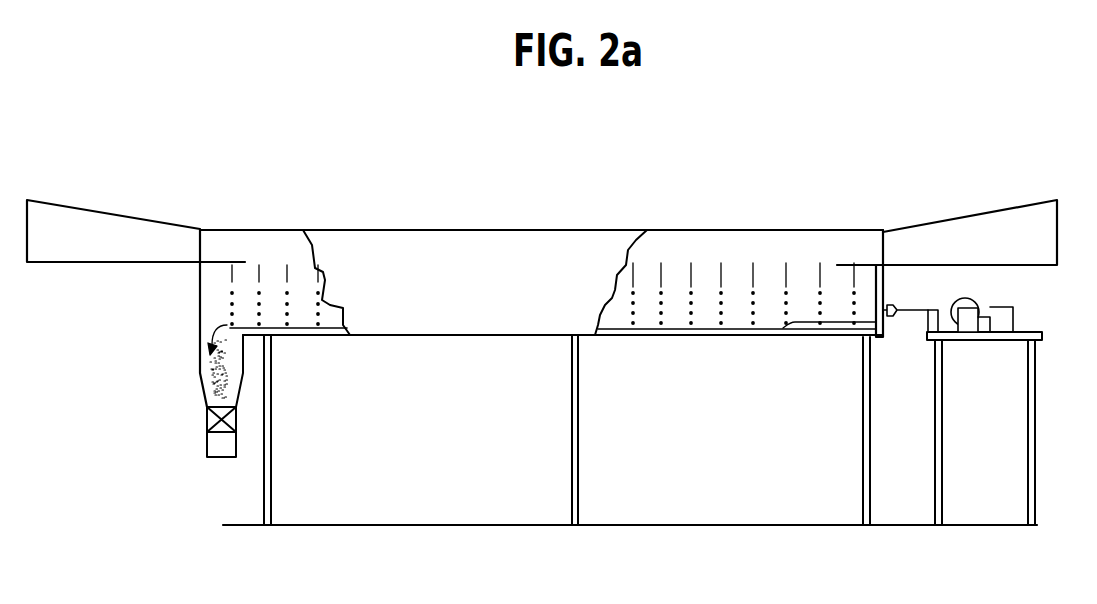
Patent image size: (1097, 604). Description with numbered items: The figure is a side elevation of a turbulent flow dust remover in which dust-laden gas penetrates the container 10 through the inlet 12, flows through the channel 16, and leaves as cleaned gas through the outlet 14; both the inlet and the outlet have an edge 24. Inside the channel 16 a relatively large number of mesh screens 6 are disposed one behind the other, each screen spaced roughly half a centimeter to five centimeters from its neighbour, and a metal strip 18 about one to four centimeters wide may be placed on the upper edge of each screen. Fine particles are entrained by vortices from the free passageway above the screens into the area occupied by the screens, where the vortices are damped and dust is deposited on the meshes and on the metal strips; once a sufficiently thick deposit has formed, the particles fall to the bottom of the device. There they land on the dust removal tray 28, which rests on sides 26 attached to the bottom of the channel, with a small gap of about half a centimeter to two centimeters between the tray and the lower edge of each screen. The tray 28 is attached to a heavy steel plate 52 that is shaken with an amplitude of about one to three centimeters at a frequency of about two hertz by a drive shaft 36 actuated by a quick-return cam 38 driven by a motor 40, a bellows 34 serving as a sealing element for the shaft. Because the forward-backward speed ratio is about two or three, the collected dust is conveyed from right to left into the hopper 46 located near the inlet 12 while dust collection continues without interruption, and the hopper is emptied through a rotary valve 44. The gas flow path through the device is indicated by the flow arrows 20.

The container 10 is at (452, 230).
The inlet 12 is at (84, 237).
The outlet 14 is at (1010, 232).
The channel 16 is at (673, 245).
The metal strip 18 is at (693, 277).
The air flow 20 is at (293, 342).
The edge 24 is at (208, 277).
The sides 26 is at (255, 330).
The dust removal tray 28 is at (657, 336).
The mesh screens 6 is at (688, 336).
The bellows 34 is at (893, 317).
The shaft 36 is at (911, 305).
The quick-return cam 38 is at (963, 293).
The motor 40 is at (1002, 305).
The rotary valve 44 is at (207, 420).
The hopper 46 is at (213, 390).
The heavy steel plate 52 is at (873, 350).